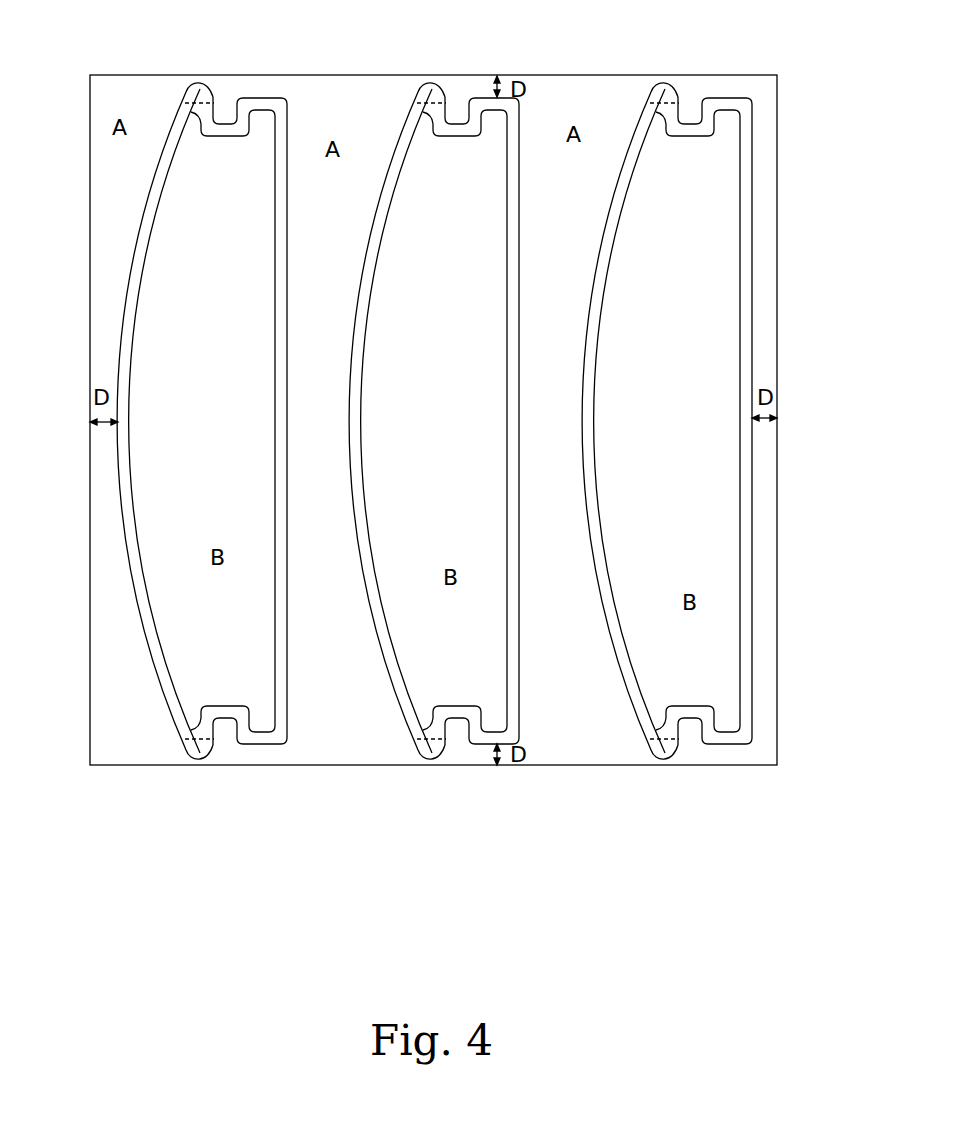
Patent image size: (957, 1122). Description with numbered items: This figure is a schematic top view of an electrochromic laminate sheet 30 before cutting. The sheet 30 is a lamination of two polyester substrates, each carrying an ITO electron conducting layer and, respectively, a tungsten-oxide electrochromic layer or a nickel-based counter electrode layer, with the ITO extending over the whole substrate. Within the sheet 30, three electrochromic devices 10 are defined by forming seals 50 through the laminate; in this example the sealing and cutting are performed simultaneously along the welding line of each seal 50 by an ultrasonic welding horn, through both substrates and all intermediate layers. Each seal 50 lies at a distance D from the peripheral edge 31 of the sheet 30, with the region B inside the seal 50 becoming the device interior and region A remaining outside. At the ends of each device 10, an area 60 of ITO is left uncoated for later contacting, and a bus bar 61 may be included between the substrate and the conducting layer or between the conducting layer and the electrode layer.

The electrochromic device 10 is at (438, 419).
The electrochromic laminate sheet 30 is at (450, 440).
The peripheral edge 31 is at (142, 75).
The seal 50 is at (133, 262).
The uncoated area of ITO 60 is at (203, 87).
The bus bar 61 is at (128, 345).